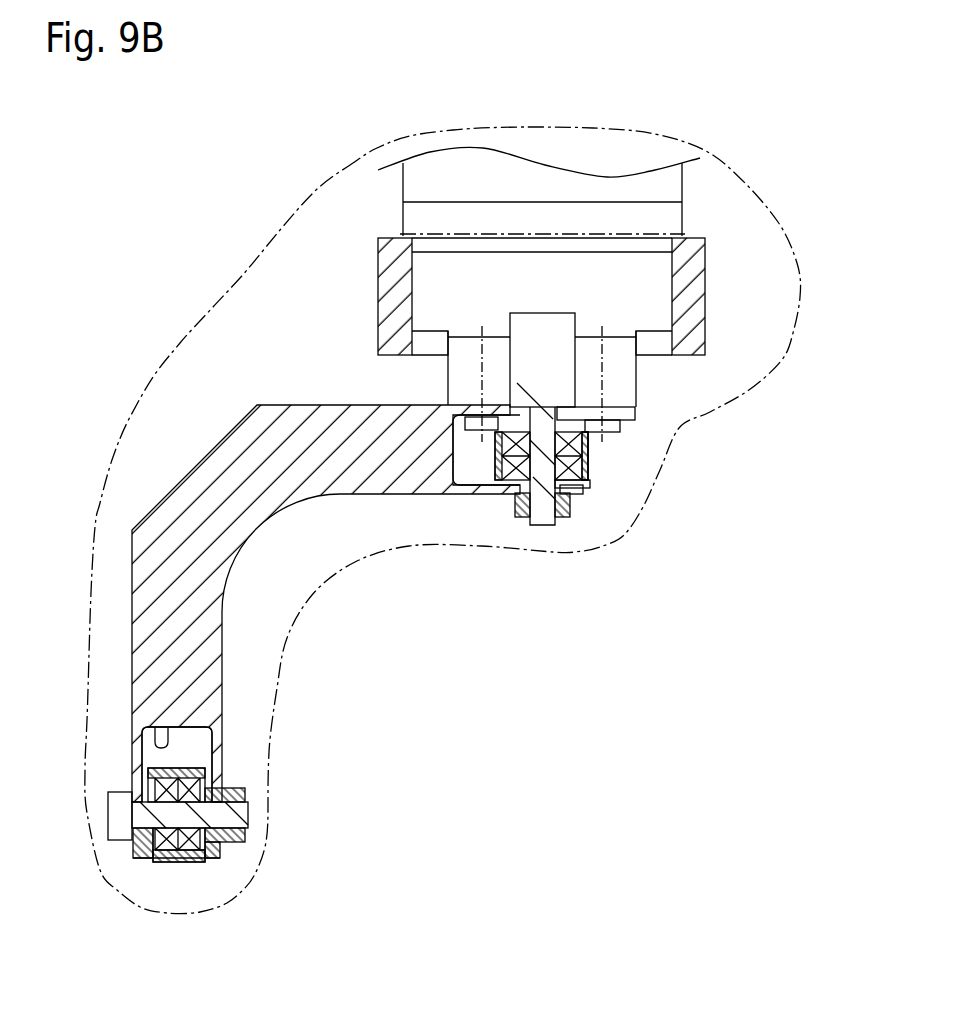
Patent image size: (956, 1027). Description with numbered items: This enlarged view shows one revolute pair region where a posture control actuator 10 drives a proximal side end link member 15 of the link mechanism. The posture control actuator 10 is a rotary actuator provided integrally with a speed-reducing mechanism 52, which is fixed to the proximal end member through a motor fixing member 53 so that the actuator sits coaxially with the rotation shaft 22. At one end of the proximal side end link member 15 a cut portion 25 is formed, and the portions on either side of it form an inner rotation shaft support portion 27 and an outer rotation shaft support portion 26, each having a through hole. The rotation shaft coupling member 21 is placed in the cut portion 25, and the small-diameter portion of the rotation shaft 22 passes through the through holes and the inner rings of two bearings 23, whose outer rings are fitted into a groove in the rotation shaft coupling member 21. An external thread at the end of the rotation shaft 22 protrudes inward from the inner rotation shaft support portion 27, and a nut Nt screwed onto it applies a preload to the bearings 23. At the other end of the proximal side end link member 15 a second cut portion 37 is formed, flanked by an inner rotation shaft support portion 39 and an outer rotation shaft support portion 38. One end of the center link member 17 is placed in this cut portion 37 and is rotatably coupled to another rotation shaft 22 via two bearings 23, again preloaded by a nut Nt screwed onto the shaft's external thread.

The posture control actuator 10 is at (610, 160).
The proximal side end link member 15 is at (233, 490).
The center link member 17 is at (183, 862).
The rotation shaft coupling member 21 is at (582, 467).
The rotation shaft 22 is at (575, 320).
The bearing 23 is at (507, 447).
The cut portion 25 is at (467, 440).
The outer rotation shaft support portion 26 is at (617, 416).
The inner rotation shaft support portion 27 is at (580, 490).
The cut portion 37 is at (160, 740).
The outer rotation shaft support portion 38 is at (137, 853).
The inner rotation shaft support portion 39 is at (217, 853).
The speed-reducing mechanism 52 is at (647, 190).
The motor fixing member 53 is at (398, 238).
The nut Nt is at (517, 513).